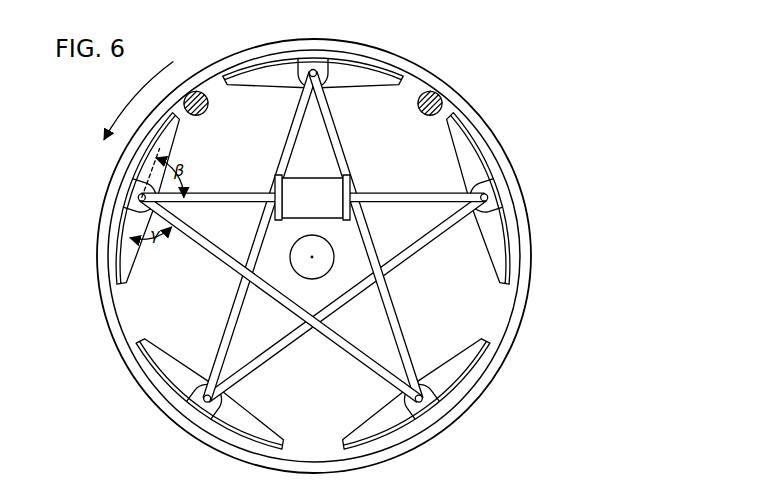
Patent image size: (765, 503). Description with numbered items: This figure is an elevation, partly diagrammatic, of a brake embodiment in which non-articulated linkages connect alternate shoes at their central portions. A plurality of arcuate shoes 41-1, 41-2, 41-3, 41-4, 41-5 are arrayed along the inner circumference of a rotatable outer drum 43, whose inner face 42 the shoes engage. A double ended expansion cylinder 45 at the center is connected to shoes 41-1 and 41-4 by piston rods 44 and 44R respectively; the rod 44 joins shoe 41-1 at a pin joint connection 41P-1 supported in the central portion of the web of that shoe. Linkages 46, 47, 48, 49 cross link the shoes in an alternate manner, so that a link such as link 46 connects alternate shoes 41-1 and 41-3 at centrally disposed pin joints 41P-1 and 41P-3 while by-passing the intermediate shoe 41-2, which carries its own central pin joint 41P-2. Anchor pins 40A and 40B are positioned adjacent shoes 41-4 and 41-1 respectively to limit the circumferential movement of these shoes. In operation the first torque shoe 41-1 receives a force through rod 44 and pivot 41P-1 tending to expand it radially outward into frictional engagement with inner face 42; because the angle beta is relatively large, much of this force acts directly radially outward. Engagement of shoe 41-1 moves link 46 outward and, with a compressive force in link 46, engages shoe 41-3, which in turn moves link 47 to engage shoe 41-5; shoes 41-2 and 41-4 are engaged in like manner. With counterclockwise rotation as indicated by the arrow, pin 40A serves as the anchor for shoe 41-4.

The anchor pin 40A is at (441, 110).
The anchor pin 40B is at (208, 112).
The arcuate shoe 41-1 is at (131, 260).
The arcuate shoe 41-2 is at (252, 413).
The arcuate shoe 41-3 is at (442, 366).
The arcuate shoe 41-4 is at (484, 233).
The arcuate shoe 41-5 is at (359, 88).
The pin joint 41P-1 is at (138, 197).
The pin joint 41P-2 is at (205, 402).
The pin joint 41P-3 is at (422, 402).
The inner face 42 is at (115, 303).
The rotatable outer drum 43 is at (98, 265).
The piston rod 44 is at (229, 192).
The piston rod 44R is at (388, 192).
The double ended expansion cylinder 45 is at (302, 181).
The link 46 is at (237, 271).
The link 47 is at (390, 297).
The link 48 is at (255, 251).
The link 49 is at (281, 350).